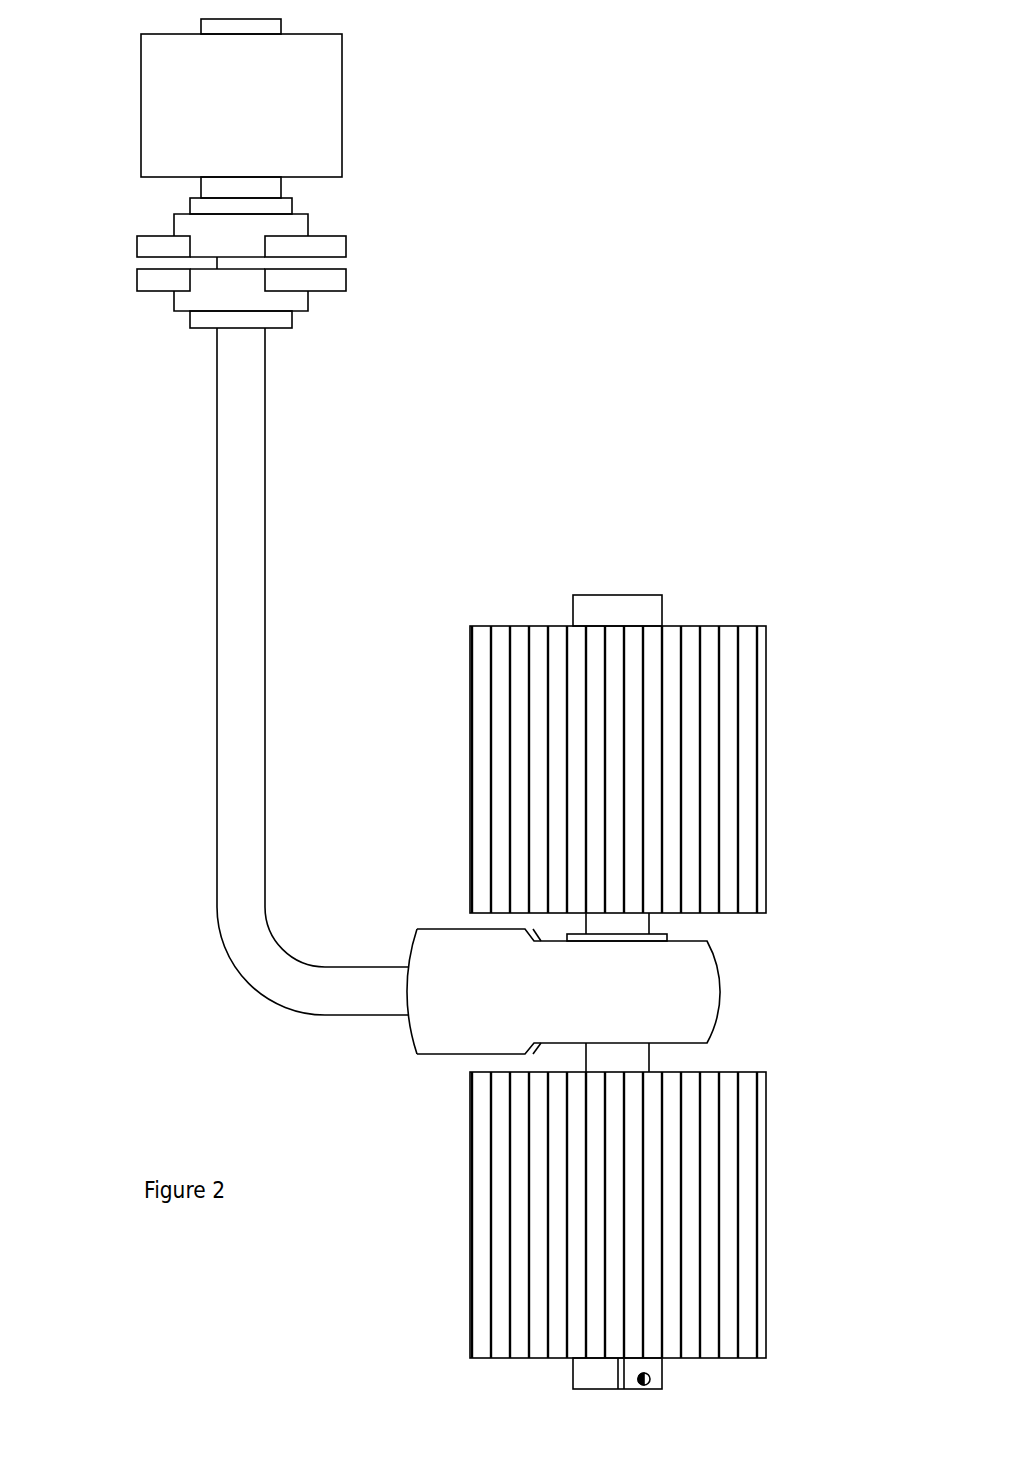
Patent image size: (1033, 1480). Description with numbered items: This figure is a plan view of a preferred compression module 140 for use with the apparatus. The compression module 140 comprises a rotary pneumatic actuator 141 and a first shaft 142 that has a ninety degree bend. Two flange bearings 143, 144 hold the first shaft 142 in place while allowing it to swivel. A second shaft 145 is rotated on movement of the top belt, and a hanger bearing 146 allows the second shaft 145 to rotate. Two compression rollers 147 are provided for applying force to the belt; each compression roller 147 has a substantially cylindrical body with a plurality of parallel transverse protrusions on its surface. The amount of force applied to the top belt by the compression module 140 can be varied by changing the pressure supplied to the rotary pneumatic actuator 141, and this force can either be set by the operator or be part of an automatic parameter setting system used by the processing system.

The compression module 140 is at (451, 704).
The rotary pneumatic actuator 141 is at (140, 125).
The first shaft 142 is at (217, 795).
The flange bearing 143 is at (137, 245).
The flange bearing 144 is at (346, 291).
The second shaft 145 is at (657, 1056).
The hanger bearing 146 is at (657, 938).
The compression roller 147 is at (767, 729).